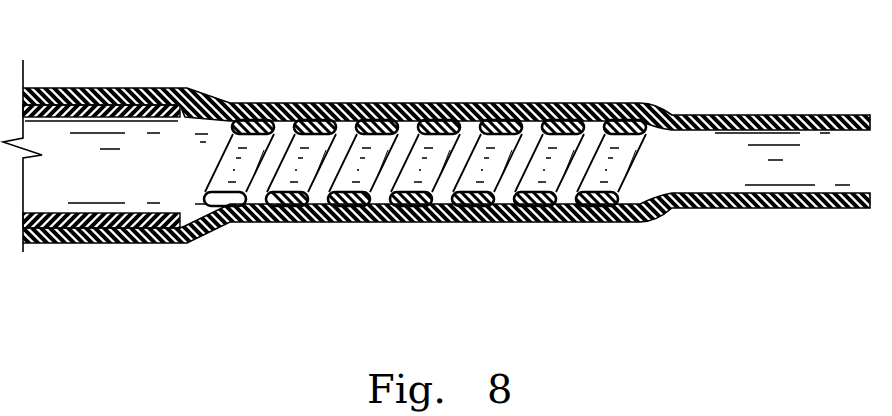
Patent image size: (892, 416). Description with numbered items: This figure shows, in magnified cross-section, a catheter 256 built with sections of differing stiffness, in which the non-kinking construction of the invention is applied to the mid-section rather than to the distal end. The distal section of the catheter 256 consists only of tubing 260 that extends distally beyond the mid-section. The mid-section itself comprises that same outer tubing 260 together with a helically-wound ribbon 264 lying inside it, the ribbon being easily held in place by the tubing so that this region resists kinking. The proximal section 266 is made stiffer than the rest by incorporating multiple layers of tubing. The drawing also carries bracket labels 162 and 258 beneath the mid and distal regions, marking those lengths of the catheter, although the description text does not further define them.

The catheter 256 is at (446, 165).
The helically-wound ribbon 264 is at (287, 147).
The tubing 260 is at (757, 113).
The proximal section 266 is at (192, 270).
The coil reinforced intermediate portion 162 is at (474, 175).
The distal shaft portion 258 is at (757, 186).